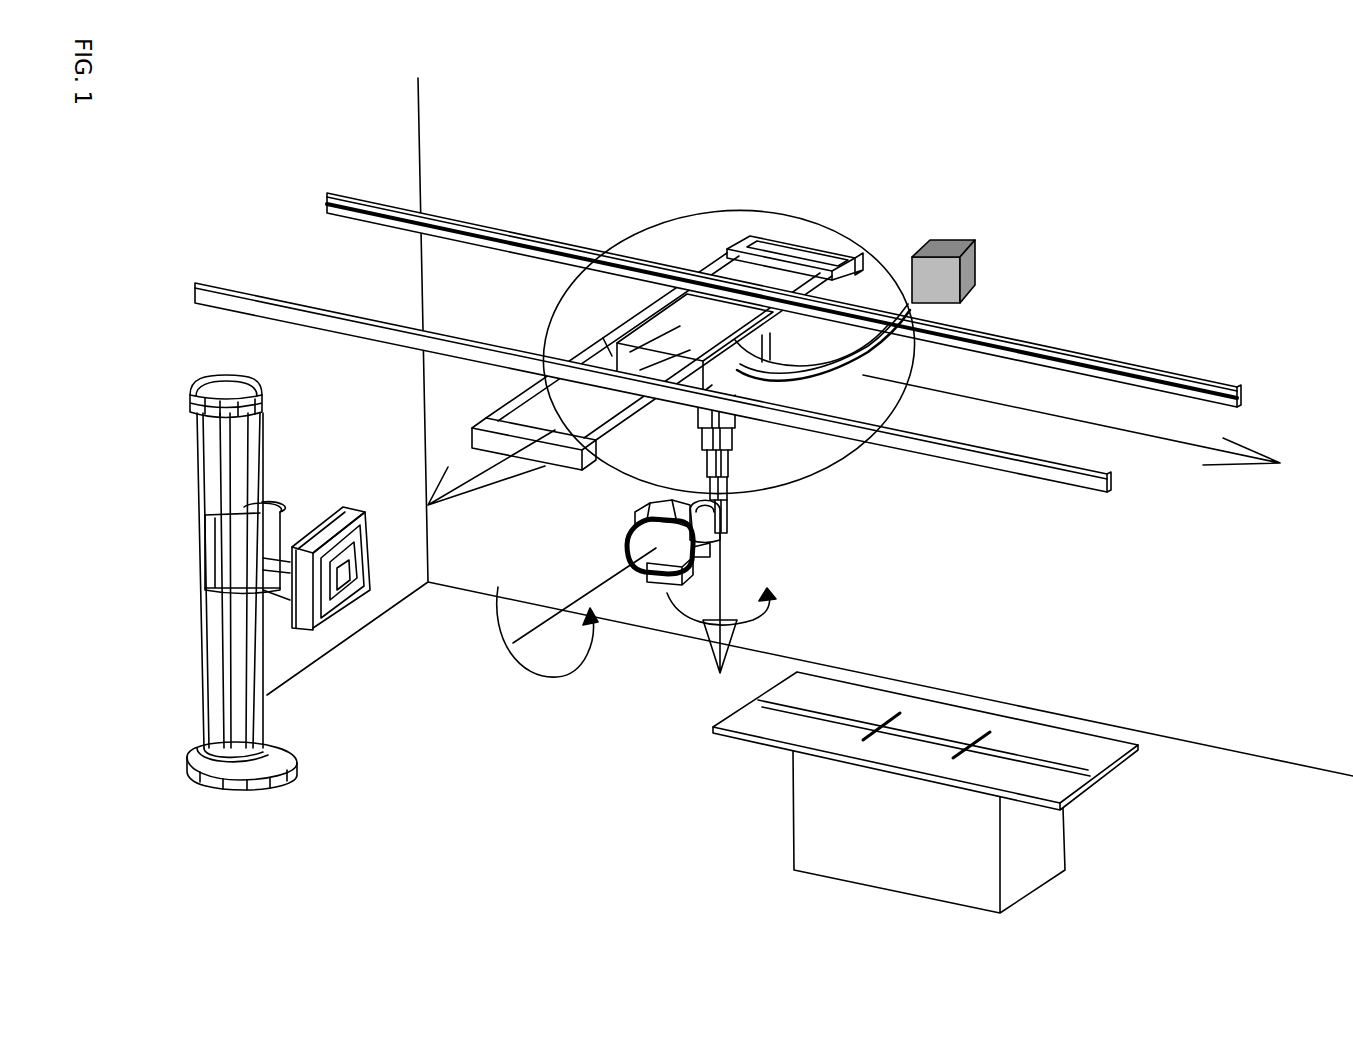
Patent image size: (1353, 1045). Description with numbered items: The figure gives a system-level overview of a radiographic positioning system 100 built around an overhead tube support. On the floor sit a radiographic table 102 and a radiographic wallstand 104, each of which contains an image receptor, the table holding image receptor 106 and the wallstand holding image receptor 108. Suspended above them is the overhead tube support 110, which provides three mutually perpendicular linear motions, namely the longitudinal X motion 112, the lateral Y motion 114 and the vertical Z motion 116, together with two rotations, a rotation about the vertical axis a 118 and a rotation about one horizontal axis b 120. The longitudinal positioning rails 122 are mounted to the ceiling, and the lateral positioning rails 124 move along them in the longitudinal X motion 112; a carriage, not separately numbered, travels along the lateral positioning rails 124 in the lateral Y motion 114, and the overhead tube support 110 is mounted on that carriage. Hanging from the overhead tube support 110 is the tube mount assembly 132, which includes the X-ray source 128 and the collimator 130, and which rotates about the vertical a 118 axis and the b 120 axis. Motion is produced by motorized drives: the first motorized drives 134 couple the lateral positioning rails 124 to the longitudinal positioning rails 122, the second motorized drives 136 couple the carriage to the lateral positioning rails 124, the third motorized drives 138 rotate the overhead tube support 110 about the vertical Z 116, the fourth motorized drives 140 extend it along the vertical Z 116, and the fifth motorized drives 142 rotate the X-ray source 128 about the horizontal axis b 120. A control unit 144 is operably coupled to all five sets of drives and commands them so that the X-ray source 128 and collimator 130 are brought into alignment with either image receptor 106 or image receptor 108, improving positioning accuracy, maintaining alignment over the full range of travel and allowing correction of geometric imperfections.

The radiographic positioning system 100 is at (90, 850).
The radiographic table 102 is at (1017, 840).
The radiographic wallstand 104 is at (257, 707).
The image receptor 106 is at (755, 738).
The image receptor 108 is at (308, 530).
The overhead tube support 110 is at (733, 478).
The longitudinal X motion 112 is at (1168, 443).
The lateral Y motion 114 is at (473, 470).
The vertical Z motion 116 is at (660, 574).
The rotation about vertical axis a 118 is at (762, 625).
The rotation about horizontal axis b 120 is at (490, 617).
The longitudinal positioning rails 122 is at (1027, 363).
The lateral positioning rails 124 is at (845, 280).
The X-ray source 128 is at (645, 510).
The collimator 130 is at (678, 585).
The tube mount assembly 132 is at (642, 528).
The first motorized drives 134 is at (590, 362).
The second motorized drives 136 is at (607, 348).
The third motorized drives 138 is at (828, 330).
The fourth motorized drives 140 is at (850, 460).
The fifth motorized drives 142 is at (710, 510).
The control unit 144 is at (970, 267).